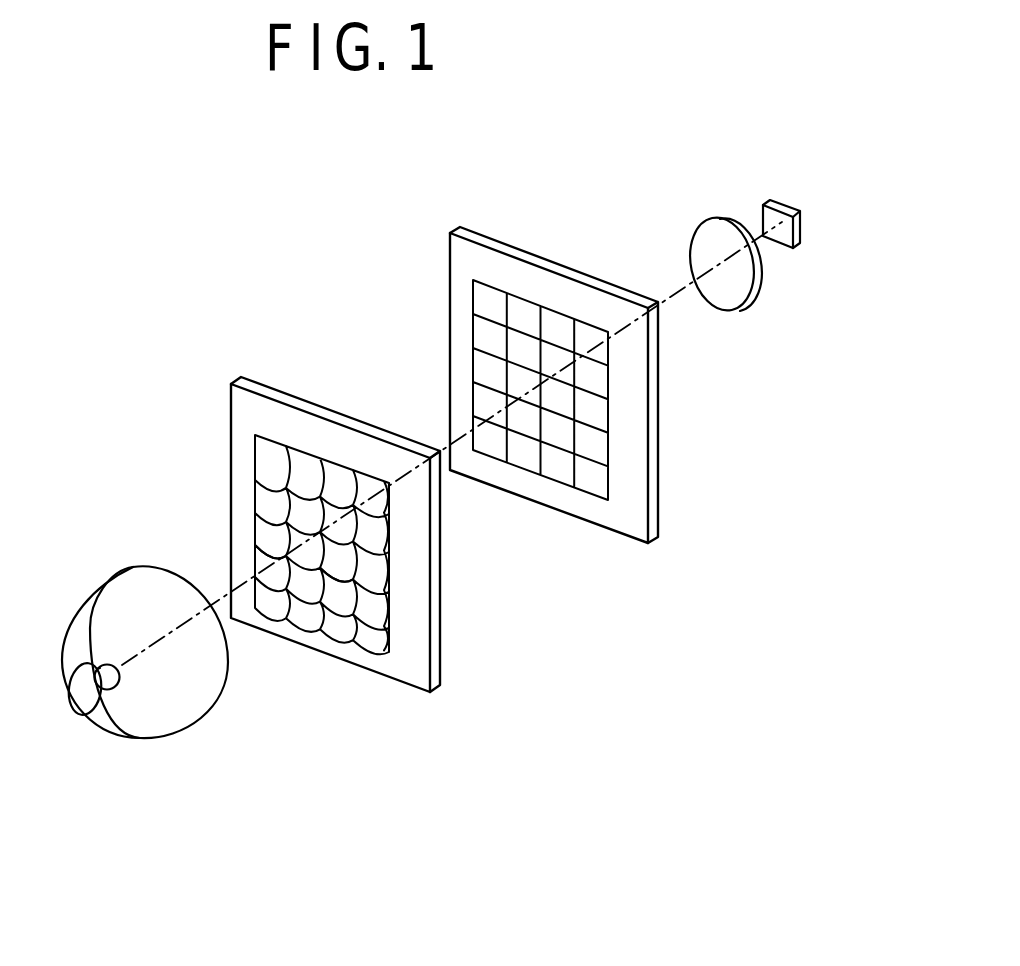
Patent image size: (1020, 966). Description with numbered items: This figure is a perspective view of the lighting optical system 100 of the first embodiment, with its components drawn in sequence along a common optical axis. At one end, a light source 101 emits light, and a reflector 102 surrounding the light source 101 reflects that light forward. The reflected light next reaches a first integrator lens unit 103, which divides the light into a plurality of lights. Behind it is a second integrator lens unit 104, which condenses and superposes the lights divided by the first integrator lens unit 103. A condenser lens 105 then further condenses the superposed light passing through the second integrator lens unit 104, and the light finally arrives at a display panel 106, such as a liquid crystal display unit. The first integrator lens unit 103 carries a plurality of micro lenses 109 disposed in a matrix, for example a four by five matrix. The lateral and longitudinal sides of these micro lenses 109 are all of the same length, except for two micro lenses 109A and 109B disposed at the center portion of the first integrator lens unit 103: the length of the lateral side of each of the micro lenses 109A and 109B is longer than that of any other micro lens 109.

The lighting optical system 100 is at (653, 170).
The light source 101 is at (108, 690).
The reflector 102 is at (152, 739).
The first integrator lens unit 103 is at (334, 571).
The second integrator lens unit 104 is at (630, 520).
The condenser lens 105 is at (730, 313).
The display panel 106 is at (783, 247).
The micro lenses 109 is at (263, 458).
The micro lens 109A is at (352, 560).
The micro lens 109B is at (282, 535).